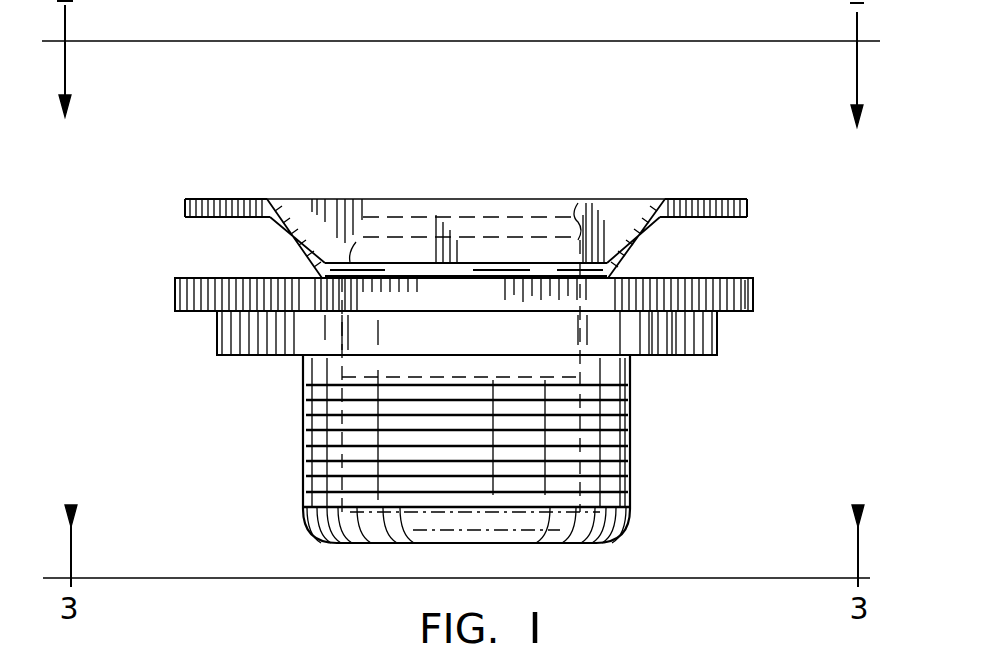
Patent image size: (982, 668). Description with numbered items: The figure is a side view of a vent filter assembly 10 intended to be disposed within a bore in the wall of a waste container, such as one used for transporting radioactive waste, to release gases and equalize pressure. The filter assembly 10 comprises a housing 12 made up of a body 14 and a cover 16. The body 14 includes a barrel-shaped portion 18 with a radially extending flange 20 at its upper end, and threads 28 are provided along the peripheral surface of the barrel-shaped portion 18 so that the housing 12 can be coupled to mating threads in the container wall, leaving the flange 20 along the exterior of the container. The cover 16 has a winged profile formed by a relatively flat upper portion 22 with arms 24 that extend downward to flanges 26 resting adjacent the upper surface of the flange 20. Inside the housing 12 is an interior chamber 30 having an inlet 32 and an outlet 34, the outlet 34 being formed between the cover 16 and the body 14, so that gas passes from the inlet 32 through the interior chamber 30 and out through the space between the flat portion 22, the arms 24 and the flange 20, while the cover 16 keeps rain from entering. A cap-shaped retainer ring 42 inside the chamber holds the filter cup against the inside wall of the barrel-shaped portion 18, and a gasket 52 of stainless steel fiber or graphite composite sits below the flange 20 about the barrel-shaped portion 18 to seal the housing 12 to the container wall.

The vent filter assembly 10 is at (732, 133).
The housing 12 is at (755, 292).
The body 14 is at (638, 362).
The cover 16 is at (748, 212).
The barrel-shaped portion 18 is at (635, 490).
The flange 20 is at (174, 297).
The flat upper portion 22 is at (185, 209).
The arms 24 is at (262, 241).
The flanges 26 is at (422, 268).
The threads 28 is at (632, 404).
The interior chamber 30 is at (300, 500).
The inlet 32 is at (405, 547).
The outlet 34 is at (633, 268).
The retainer ring 42 is at (592, 183).
The gasket 52 is at (215, 345).